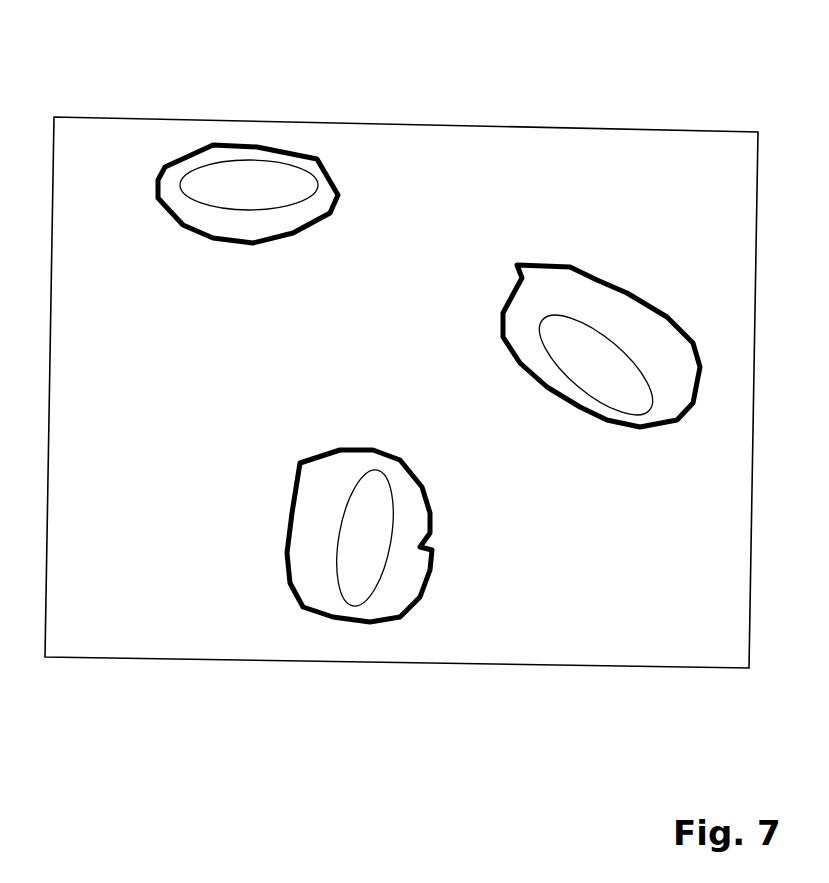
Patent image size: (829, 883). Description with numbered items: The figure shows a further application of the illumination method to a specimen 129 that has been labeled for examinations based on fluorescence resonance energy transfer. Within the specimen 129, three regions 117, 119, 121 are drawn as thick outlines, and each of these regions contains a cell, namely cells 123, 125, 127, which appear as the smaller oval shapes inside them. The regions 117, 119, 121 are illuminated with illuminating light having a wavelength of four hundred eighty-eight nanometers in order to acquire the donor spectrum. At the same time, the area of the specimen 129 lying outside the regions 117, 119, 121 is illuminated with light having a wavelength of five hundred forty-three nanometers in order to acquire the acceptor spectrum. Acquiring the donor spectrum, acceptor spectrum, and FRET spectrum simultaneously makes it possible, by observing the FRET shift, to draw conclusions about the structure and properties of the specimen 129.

The region 117 is at (657, 337).
The region 119 is at (397, 602).
The region 121 is at (320, 200).
The cell 123 is at (360, 550).
The cell 125 is at (217, 197).
The cell 127 is at (590, 367).
The specimen 129 is at (493, 165).